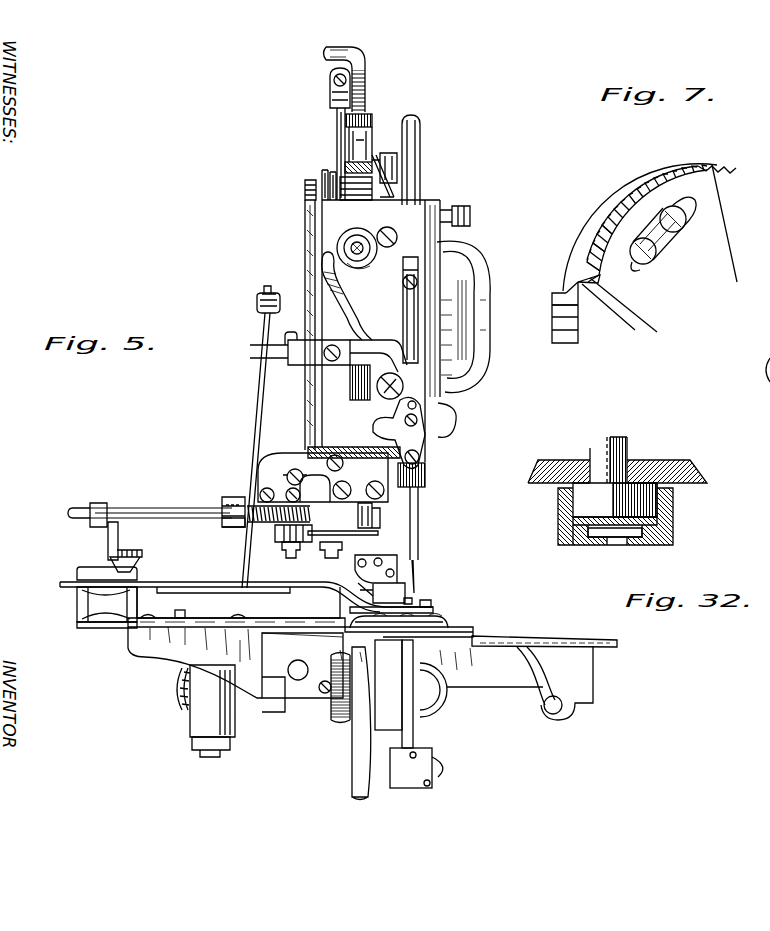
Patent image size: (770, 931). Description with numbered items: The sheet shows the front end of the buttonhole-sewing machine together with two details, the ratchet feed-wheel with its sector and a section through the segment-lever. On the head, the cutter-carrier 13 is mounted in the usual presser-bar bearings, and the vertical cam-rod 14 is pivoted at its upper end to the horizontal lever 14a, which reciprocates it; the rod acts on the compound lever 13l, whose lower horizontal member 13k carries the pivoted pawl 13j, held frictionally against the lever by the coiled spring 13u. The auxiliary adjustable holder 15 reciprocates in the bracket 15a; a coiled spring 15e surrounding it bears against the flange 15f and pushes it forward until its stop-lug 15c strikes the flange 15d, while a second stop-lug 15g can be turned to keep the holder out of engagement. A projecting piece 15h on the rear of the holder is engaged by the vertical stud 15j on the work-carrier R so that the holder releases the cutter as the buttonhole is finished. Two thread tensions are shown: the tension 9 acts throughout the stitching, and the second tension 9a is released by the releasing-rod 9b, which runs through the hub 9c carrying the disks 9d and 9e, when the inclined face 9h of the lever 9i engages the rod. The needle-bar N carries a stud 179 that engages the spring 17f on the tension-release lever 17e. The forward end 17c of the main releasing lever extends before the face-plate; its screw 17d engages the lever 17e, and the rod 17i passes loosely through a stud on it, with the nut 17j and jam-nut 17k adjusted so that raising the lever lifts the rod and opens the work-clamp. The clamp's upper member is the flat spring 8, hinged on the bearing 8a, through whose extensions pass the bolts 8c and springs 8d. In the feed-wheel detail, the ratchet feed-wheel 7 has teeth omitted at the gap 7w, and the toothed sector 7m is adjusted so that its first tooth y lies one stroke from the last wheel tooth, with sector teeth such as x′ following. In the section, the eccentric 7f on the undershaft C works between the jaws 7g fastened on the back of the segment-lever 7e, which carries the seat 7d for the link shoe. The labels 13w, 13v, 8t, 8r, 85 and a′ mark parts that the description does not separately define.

In FIG. 5, the bent tube 13w is at (337, 48).
In FIG. 5, the vertical tube 13v is at (366, 92).
In FIG. 5, the horizontal lever 14a is at (338, 72).
In FIG. 5, the vertical cam-rod 14 is at (338, 118).
In FIG. 5, the tension-releasing rod 9b is at (375, 147).
In FIG. 5, the hub 9c is at (371, 208).
In FIG. 5, the lever 9i is at (398, 160).
In FIG. 5, the inclined face 9h is at (394, 191).
In FIG. 5, the needle-bar N is at (420, 117).
In FIG. 5, the tension-disk 9d is at (323, 172).
In FIG. 5, the tension-disk 9e is at (332, 172).
In FIG. 5, the second tension 9a is at (291, 198).
In FIG. 5, the tension 9 is at (347, 246).
In FIG. 5, the stud 179 is at (410, 258).
In FIG. 5, the tension-release lever 17e is at (338, 306).
In FIG. 5, the spring 17f is at (370, 338).
In FIG. 5, the forward end of lever 17c is at (300, 365).
In FIG. 5, the screw 17d is at (334, 373).
In FIG. 5, the jam-nut 17k is at (261, 297).
In FIG. 5, the nut 17j is at (258, 308).
In FIG. 5, the rod 17i is at (252, 402).
In FIG. 5, the bracket 15a is at (271, 472).
In FIG. 5, the flange 15d is at (385, 484).
In FIG. 5, the cutter-carrier 13 is at (373, 513).
In FIG. 5, the coiled spring 15e is at (243, 500).
In FIG. 5, the auxiliary adjustable holder 15 is at (141, 508).
In FIG. 5, the stop-lug 15g is at (223, 511).
In FIG. 5, the projecting piece 15h is at (93, 520).
In FIG. 5, the vertical stud 15j is at (118, 538).
In FIG. 5, the flange 15f is at (236, 517).
In FIG. 5, the lower horizontal member 13k is at (278, 527).
In FIG. 5, the pawl 13j is at (276, 543).
In FIG. 5, the coiled spring 13u is at (291, 553).
In FIG. 5, the stop-lug 15c is at (325, 543).
In FIG. 5, the compound lever 13l is at (348, 536).
In FIG. 5, the flat spring 8 is at (213, 582).
In FIG. 5, the springs 8d is at (352, 603).
In FIG. 5, the bolts 8c is at (409, 602).
In FIG. 5, the piece 8t is at (373, 602).
In FIG. 5, the clip 8r is at (432, 603).
In FIG. 5, the bed plate a′ is at (481, 629).
In FIG. 5, the bearing 8a is at (137, 578).
In FIG. 5, the stop 85 is at (161, 617).
In FIG. 5, the work-carrier R is at (360, 693).
In FIG. 7, the ratchet feed-wheel 7 is at (570, 322).
In FIG. 7, the gap 7w is at (580, 244).
In FIG. 7, the tooth x′ is at (584, 266).
In FIG. 7, the first tooth y is at (605, 279).
In FIG. 7, the toothed sector 7m is at (663, 243).
In FIG. 32, the undershaft C is at (627, 440).
In FIG. 32, the jaws 7g is at (558, 508).
In FIG. 32, the eccentric 7f is at (623, 500).
In FIG. 32, the segment-lever 7e is at (563, 542).
In FIG. 32, the seat 7d is at (617, 537).